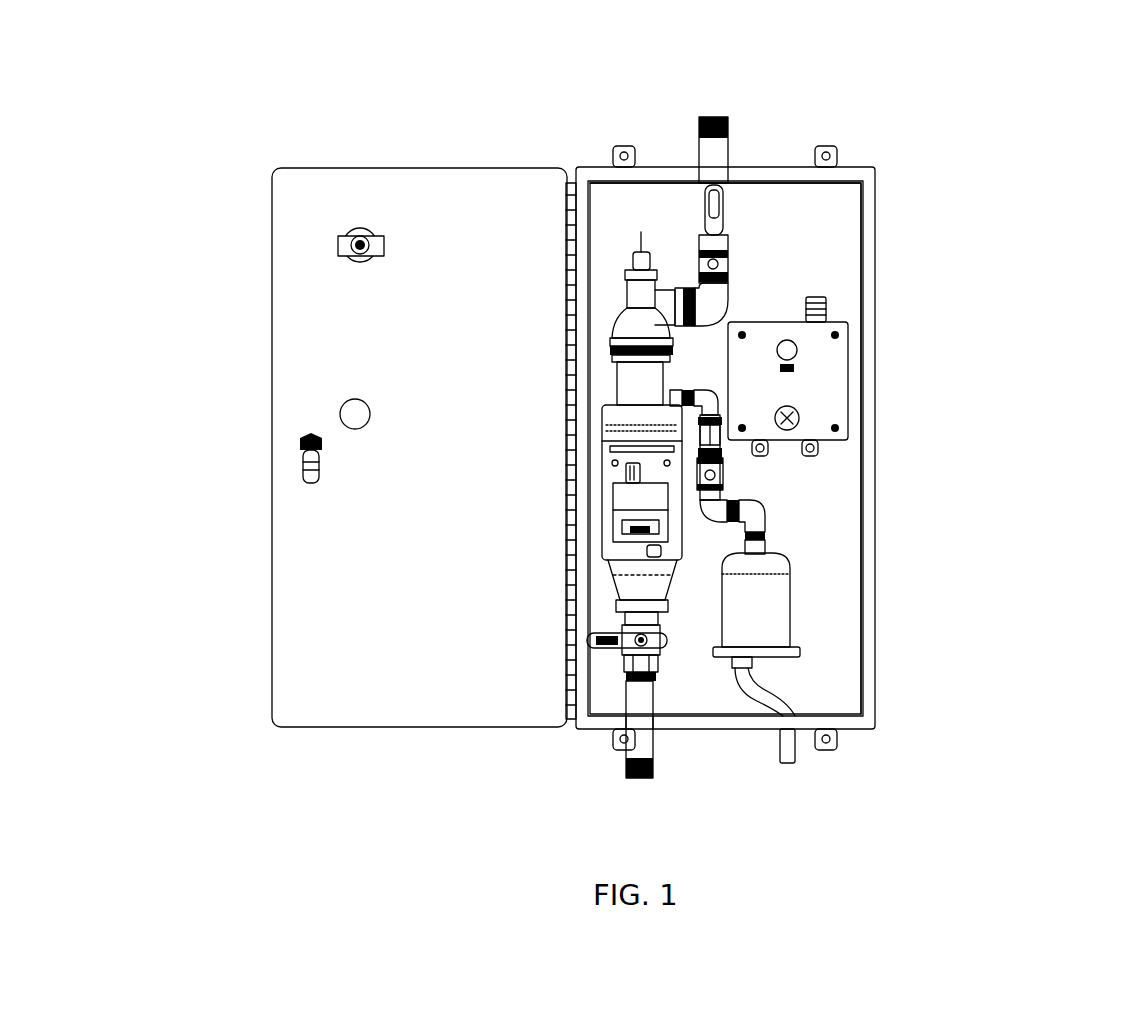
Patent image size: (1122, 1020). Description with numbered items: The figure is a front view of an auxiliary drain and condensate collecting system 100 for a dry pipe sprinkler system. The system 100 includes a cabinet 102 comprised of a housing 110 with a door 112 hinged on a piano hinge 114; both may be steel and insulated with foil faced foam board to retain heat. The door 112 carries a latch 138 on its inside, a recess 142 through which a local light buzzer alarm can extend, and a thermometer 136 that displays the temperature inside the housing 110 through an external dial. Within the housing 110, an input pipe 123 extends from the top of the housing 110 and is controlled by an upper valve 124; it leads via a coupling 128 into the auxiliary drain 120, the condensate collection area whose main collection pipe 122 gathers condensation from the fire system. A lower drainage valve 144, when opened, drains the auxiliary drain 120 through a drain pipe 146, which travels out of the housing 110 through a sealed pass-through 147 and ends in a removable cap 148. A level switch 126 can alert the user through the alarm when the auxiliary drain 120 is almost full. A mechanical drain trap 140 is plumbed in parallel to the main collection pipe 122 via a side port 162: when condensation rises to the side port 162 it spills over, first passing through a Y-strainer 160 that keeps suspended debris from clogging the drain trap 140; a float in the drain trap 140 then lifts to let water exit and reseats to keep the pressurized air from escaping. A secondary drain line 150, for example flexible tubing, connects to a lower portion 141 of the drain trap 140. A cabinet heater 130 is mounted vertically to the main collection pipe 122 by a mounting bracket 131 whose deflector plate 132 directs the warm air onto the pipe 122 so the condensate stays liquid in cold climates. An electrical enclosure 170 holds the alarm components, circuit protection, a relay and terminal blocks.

The auxiliary drain and/or condensate collecting system 100 is at (695, 392).
The cabinet 102 is at (917, 187).
The housing 110 is at (725, 448).
The door 112 is at (419, 447).
The piano hinge 114 is at (563, 152).
The auxiliary drain 120 is at (588, 538).
The main collection pipe 122 is at (604, 389).
The input pipe 123 is at (747, 122).
The upper valve 124 is at (777, 240).
The level switch 126 is at (604, 240).
The coupling 128 is at (604, 311).
The heater 130 is at (588, 502).
The mounting bracket 131 is at (588, 466).
The deflector plate 132 is at (588, 443).
The thermometer 136 is at (318, 237).
The latch 138 is at (286, 458).
The drain trap 140 is at (796, 606).
The lower portion of the drain trap 141 is at (798, 661).
The recess 142 is at (312, 412).
The lower drainage valve 144 is at (585, 634).
The drain pipe 146 is at (596, 750).
The pass-through 147 is at (668, 740).
The cap 148 is at (600, 789).
The secondary drain line 150 is at (776, 691).
The Y-strainer 160 is at (727, 479).
The side port 162 is at (704, 402).
The electrical enclosure 170 is at (867, 382).